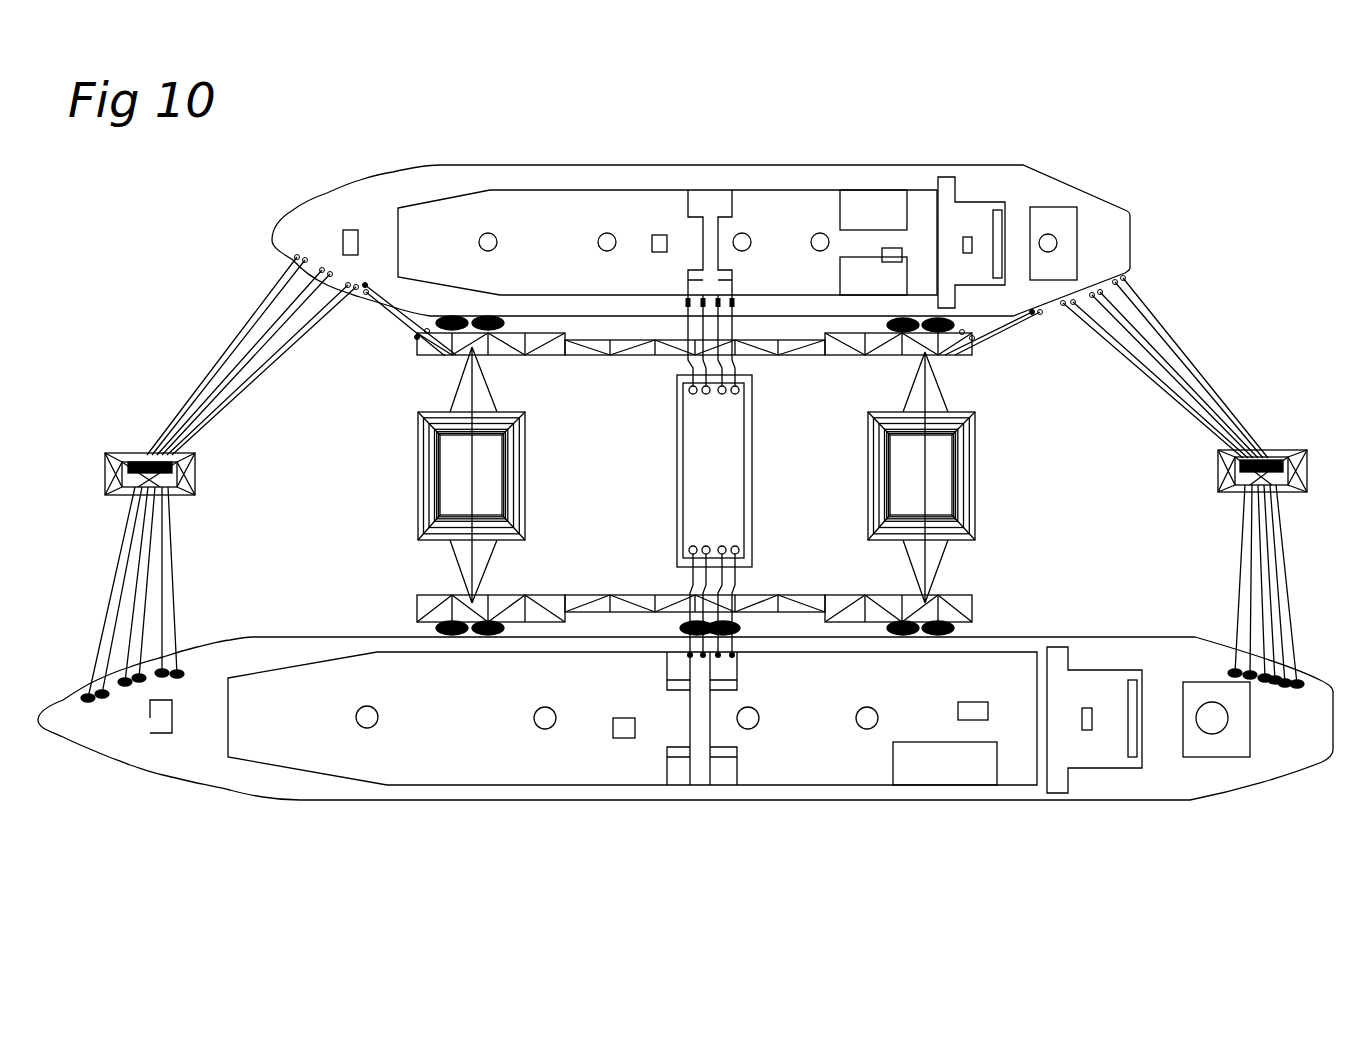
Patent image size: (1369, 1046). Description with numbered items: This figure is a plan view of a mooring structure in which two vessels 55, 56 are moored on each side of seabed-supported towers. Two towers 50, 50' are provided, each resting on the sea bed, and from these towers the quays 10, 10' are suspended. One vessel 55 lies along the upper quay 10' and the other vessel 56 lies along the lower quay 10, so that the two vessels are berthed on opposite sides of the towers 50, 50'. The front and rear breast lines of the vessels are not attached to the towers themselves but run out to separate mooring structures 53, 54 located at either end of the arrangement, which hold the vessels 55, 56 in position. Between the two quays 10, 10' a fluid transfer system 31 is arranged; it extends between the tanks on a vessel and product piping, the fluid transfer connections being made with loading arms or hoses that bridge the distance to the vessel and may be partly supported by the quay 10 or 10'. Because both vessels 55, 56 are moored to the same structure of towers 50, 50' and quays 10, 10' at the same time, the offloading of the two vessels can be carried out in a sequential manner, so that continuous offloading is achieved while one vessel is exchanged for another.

The vessel 55 is at (578, 208).
The vessel 56 is at (508, 755).
The mooring structure 54 is at (196, 475).
The mooring structure 53 is at (1218, 473).
The tower 50' is at (508, 475).
The tower 50 is at (960, 477).
The fluid transfer system 31 is at (736, 480).
The quay 10' is at (694, 378).
The quay 10 is at (694, 584).